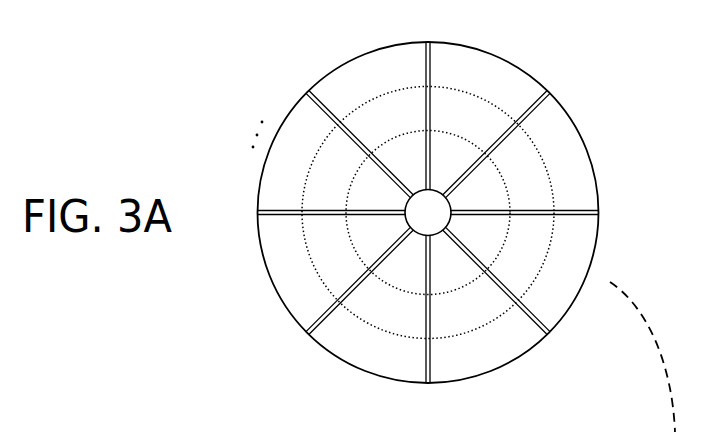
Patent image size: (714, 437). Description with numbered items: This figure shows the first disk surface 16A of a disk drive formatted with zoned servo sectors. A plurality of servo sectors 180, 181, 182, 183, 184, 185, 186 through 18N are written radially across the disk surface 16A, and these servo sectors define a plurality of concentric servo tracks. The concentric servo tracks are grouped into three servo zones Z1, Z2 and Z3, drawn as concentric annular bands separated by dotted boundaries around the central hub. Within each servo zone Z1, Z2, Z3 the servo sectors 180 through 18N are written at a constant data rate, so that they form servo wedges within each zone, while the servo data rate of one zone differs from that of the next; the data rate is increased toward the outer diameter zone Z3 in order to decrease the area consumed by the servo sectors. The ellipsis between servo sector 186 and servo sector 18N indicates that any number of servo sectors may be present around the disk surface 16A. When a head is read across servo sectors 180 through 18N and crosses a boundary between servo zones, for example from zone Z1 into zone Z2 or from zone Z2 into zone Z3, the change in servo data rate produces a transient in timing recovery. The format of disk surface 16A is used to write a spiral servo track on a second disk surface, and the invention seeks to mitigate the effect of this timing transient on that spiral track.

The first disk surface 16A is at (536, 63).
The servo sector 180 is at (430, 42).
The servo sector 181 is at (548, 92).
The servo sector 182 is at (599, 213).
The servo sector 183 is at (549, 333).
The servo sector 184 is at (428, 383).
The servo sector 185 is at (307, 333).
The servo sector 186 is at (258, 212).
The servo sector 18N is at (307, 92).
The servo zone Z1 is at (407, 265).
The servo zone Z2 is at (388, 310).
The servo zone Z3 is at (369, 350).